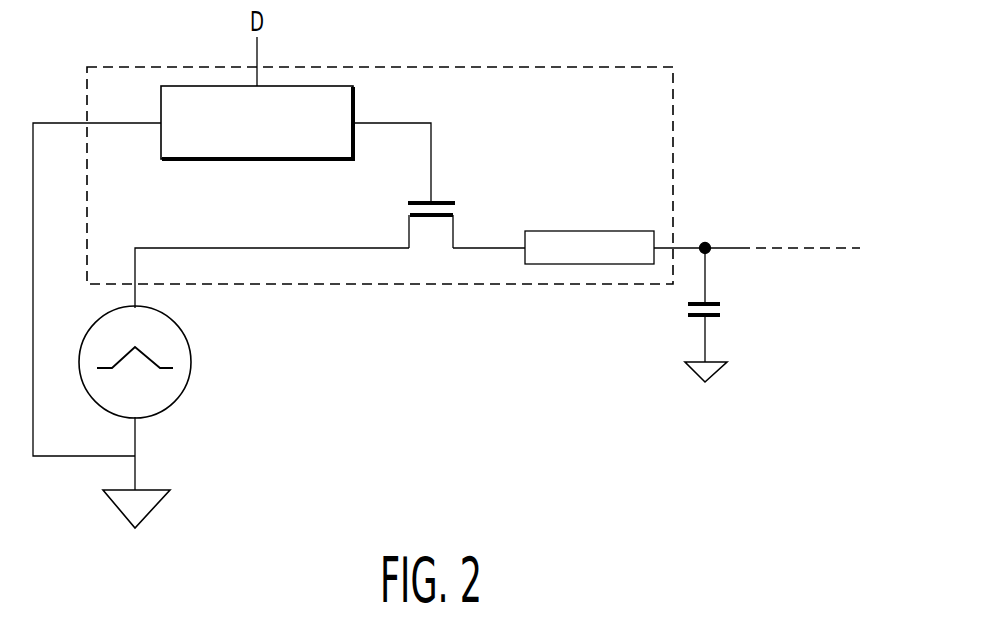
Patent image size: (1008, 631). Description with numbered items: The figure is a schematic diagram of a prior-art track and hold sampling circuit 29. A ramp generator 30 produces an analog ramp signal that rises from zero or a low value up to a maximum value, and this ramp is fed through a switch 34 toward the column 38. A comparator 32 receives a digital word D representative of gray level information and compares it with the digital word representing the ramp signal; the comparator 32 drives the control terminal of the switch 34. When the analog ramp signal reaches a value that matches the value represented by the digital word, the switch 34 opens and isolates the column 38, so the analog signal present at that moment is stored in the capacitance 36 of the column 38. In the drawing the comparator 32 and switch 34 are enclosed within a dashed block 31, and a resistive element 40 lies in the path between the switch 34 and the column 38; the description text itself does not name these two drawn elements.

The track and hold sampling circuit 29 is at (446, 494).
The ramp generator 30 is at (172, 404).
The pixel cell block 31 is at (530, 67).
The comparator 32 is at (353, 100).
The switch 34 is at (468, 200).
The capacitance 36 is at (680, 342).
The column 38 is at (722, 248).
The resistor 40 is at (585, 231).